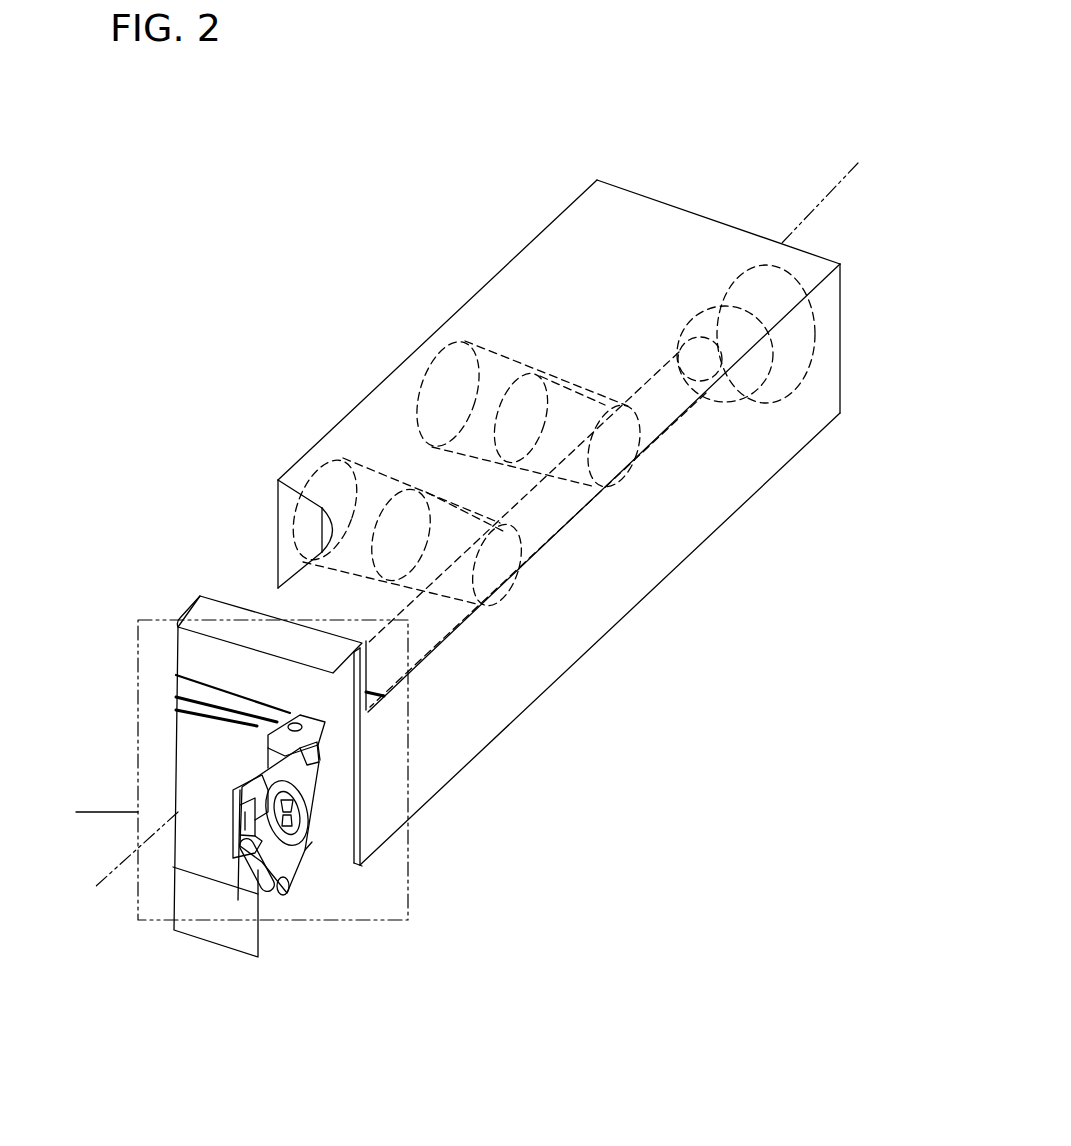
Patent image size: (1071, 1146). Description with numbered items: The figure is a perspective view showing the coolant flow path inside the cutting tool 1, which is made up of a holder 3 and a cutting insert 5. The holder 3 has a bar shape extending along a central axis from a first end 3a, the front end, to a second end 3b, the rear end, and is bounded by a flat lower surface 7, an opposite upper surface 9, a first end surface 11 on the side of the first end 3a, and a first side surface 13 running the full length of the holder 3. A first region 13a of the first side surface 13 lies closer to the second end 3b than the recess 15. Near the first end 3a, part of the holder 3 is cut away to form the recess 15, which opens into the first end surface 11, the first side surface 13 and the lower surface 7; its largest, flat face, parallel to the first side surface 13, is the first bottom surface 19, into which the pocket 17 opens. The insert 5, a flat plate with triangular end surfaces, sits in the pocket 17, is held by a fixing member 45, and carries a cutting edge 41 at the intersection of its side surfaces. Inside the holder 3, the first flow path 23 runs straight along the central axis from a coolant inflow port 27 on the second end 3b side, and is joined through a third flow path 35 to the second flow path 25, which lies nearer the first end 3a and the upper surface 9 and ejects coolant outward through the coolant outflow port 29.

The cutting tool 1 is at (326, 231).
The holder 3 is at (712, 468).
The first end 3a is at (185, 806).
The second end 3b is at (735, 227).
The cutting insert 5 is at (317, 777).
The lower surface 7 is at (680, 566).
The upper surface 9 is at (588, 255).
The first end surface 11 is at (208, 838).
The first side surface 13 is at (600, 564).
The first region 13a is at (532, 668).
The recess 15 is at (357, 920).
The pocket 17 is at (283, 882).
The first bottom surface 19 is at (320, 862).
The first flow path 23 is at (683, 428).
The second flow path 25 is at (323, 713).
The coolant inflow port 27 is at (812, 315).
The coolant outflow port 29 is at (287, 718).
The third flow path 35 is at (300, 688).
The cutting edge 41 is at (242, 878).
The fixing member 45 is at (293, 815).